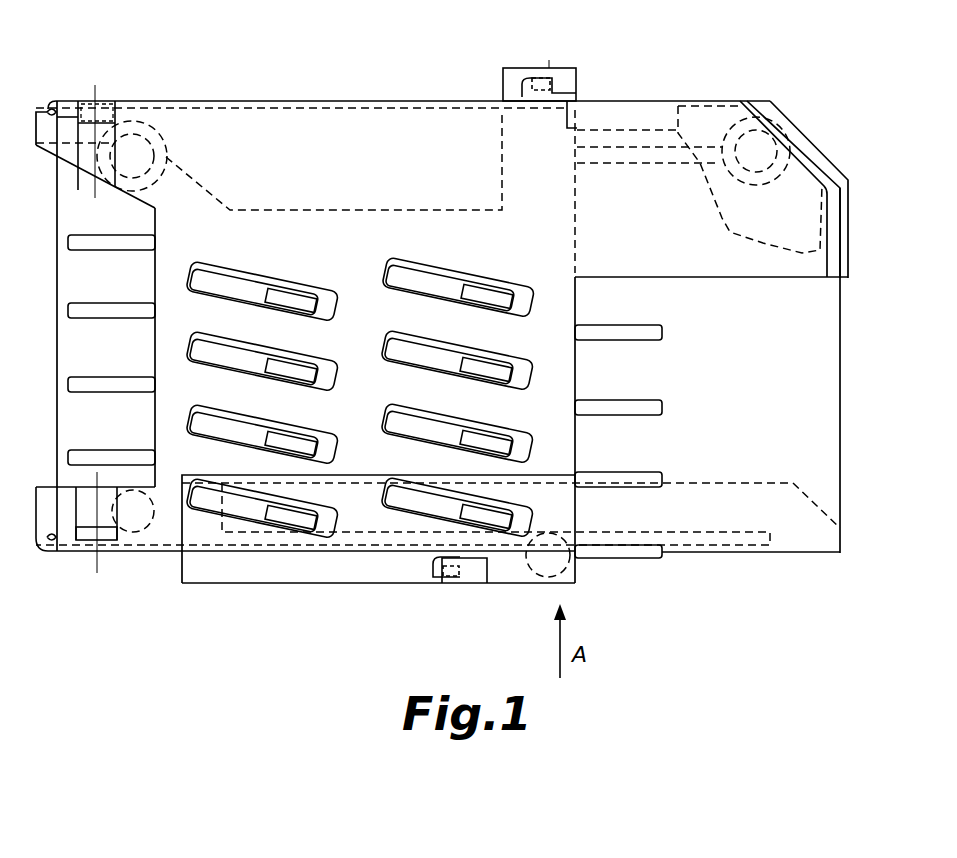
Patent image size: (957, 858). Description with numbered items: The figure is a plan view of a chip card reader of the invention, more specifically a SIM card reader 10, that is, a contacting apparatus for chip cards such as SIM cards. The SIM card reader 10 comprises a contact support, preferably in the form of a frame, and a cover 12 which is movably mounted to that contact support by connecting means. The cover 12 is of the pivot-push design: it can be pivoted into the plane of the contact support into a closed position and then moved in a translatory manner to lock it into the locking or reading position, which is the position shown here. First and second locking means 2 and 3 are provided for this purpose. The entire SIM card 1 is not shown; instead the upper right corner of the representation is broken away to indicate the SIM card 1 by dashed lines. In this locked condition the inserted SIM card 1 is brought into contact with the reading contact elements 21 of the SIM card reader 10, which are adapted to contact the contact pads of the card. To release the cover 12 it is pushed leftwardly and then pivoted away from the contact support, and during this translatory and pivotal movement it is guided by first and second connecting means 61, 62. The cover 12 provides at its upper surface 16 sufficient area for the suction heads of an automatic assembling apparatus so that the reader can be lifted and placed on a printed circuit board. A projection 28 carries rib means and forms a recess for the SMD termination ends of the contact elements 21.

The SIM card 1 is at (807, 226).
The first locking means 2 is at (550, 61).
The second locking means 3 is at (441, 594).
The SIM card reader 10 is at (799, 108).
The cover 12 is at (277, 124).
The upper surface 16 is at (405, 127).
The reading contact elements 21 is at (482, 287).
The projection 28 is at (620, 115).
The first connecting means 61 is at (110, 90).
The second connecting means 62 is at (78, 558).